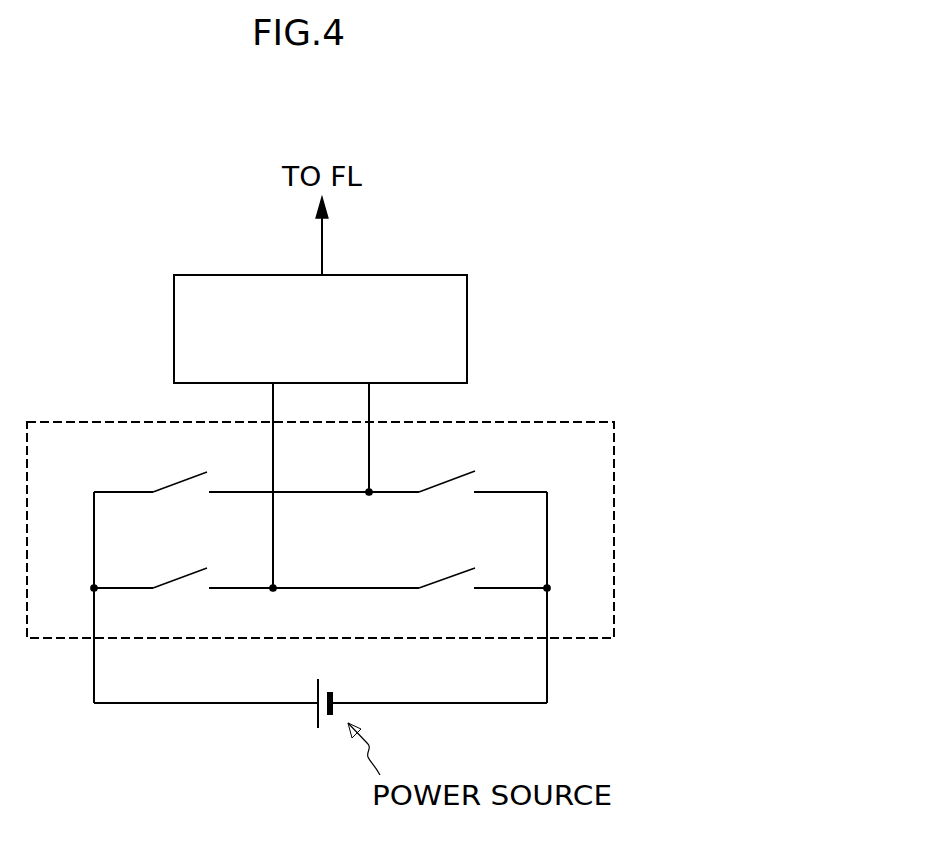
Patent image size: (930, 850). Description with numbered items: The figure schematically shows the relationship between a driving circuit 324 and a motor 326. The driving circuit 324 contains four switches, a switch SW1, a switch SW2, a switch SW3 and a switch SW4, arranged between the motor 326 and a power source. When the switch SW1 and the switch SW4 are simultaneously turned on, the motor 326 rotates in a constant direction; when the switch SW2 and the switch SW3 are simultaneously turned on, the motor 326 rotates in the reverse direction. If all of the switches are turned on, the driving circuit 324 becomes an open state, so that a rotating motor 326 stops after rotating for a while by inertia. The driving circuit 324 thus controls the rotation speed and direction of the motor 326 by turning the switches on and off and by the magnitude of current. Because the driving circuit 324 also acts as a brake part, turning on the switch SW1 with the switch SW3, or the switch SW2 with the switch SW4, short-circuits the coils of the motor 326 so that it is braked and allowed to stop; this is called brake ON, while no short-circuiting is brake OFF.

The motor 326 is at (467, 327).
The driving circuit 324 is at (375, 530).
The switch 1 SW1 is at (231, 471).
The switch 2 SW2 is at (458, 471).
The switch 3 SW3 is at (256, 565).
The switch 4 SW4 is at (465, 565).